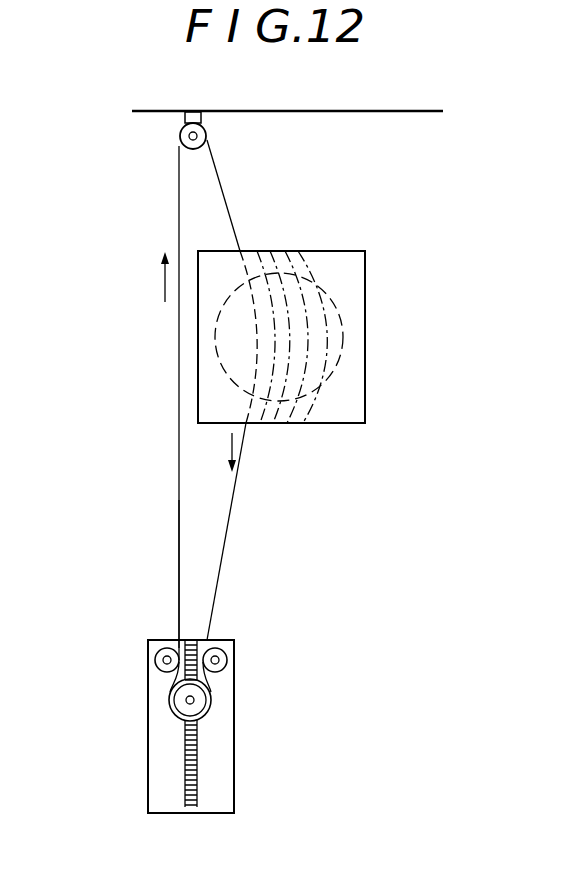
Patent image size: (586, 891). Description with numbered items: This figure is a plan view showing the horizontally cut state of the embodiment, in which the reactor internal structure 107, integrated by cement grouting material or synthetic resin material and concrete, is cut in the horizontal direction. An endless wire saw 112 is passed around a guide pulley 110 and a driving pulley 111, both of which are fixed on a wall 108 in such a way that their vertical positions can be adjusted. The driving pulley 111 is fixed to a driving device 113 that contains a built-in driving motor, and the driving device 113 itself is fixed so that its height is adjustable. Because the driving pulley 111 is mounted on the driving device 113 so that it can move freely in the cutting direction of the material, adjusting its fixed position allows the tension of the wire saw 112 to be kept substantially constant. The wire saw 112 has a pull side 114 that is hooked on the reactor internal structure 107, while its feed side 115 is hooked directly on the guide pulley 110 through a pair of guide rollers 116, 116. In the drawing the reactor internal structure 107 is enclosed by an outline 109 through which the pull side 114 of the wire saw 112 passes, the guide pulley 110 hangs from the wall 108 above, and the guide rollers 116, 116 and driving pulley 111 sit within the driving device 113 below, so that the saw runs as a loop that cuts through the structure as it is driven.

The reactor internal structure 107 is at (230, 394).
The wall 108 is at (398, 111).
The housing 109 is at (368, 278).
The guide pulley 110 is at (180, 140).
The driving pulley 111 is at (170, 705).
The endless wire saw 112 is at (176, 490).
The driving device 113 is at (160, 777).
The pull side 114 is at (223, 553).
The feed side 115 is at (178, 555).
The guide rollers 116 is at (156, 662).